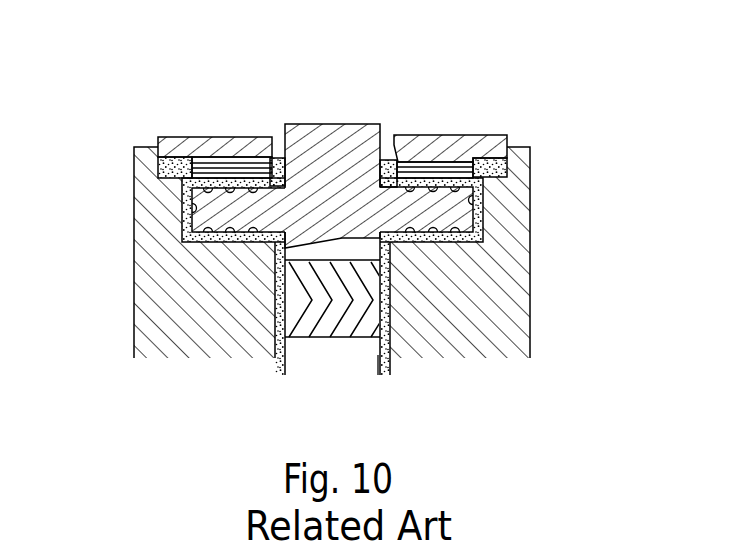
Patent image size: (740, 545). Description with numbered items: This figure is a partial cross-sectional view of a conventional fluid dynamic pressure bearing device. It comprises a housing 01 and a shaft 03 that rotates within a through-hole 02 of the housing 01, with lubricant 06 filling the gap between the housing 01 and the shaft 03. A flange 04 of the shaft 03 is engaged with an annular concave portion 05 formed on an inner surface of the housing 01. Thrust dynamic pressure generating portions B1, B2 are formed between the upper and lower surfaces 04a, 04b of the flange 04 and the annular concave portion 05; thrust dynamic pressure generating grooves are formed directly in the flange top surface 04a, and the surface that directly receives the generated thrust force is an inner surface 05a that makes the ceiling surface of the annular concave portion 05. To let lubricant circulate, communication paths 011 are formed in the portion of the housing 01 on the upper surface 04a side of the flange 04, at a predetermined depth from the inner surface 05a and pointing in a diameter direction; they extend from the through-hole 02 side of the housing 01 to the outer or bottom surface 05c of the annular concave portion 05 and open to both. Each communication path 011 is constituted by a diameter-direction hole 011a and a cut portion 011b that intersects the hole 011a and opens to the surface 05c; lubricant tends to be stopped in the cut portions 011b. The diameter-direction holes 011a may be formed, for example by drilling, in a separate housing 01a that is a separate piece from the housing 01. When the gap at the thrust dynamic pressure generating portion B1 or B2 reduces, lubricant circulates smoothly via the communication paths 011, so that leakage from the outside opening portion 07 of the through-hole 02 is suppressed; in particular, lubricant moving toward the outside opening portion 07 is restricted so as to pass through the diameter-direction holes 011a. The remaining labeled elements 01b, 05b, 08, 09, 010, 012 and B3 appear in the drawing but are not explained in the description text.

The housing 01 is at (147, 328).
The separate housing 01a is at (428, 160).
The housing portion 01b is at (518, 218).
The communication path 011 is at (174, 111).
The diameter-direction hole 011a is at (243, 162).
The cut portion 011b is at (173, 167).
The central shaft member 012 is at (302, 153).
The through-hole 02 is at (270, 352).
The shaft 03 is at (365, 368).
The flange 04 is at (175, 202).
The upper surface of flange 04a is at (182, 183).
The lower surface of flange 04b is at (182, 236).
The annular concave portion 05 is at (496, 241).
The inner surface 05a is at (460, 175).
The lower seal portion 05b is at (508, 279).
The outer surface of annular concave portion 05c is at (483, 199).
The lubricant 06 is at (393, 312).
The outside opening portion 07 is at (384, 150).
The sealing block 08 is at (507, 173).
The right gap layer 09 is at (435, 240).
The chevron spring element 010 is at (320, 352).
The thrust dynamic pressure generating portion B1 is at (240, 155).
The thrust dynamic pressure generating portion B2 is at (223, 241).
The bonding point B3 is at (270, 293).